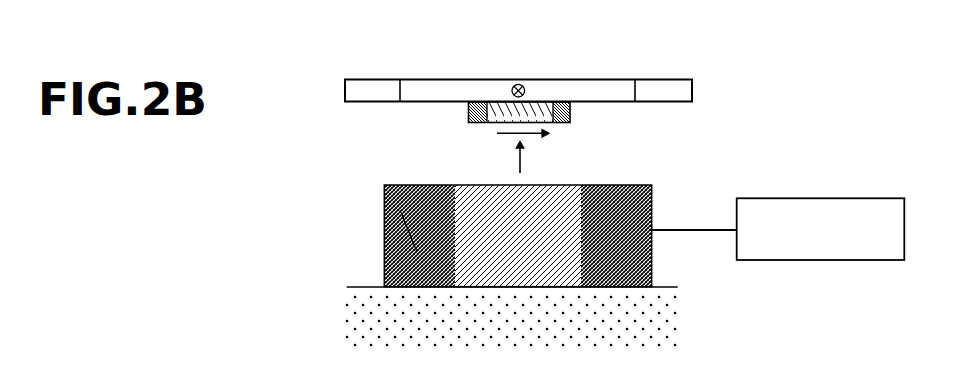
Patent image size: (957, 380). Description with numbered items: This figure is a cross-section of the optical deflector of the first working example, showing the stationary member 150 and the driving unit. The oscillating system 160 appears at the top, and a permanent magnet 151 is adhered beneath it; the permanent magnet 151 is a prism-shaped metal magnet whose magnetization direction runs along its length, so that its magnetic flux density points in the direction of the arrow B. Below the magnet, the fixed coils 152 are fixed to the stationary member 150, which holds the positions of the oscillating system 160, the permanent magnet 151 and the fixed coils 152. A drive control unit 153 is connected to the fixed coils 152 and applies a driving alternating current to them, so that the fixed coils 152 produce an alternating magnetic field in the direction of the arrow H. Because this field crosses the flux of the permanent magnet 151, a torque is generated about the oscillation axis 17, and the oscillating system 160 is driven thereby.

The oscillating system 160 is at (418, 88).
The oscillation axis 17 is at (518, 84).
The permanent magnet 151 is at (566, 121).
The fixed coil 152 is at (384, 208).
The stationary member 150 is at (663, 327).
The drive control unit 153 is at (778, 229).